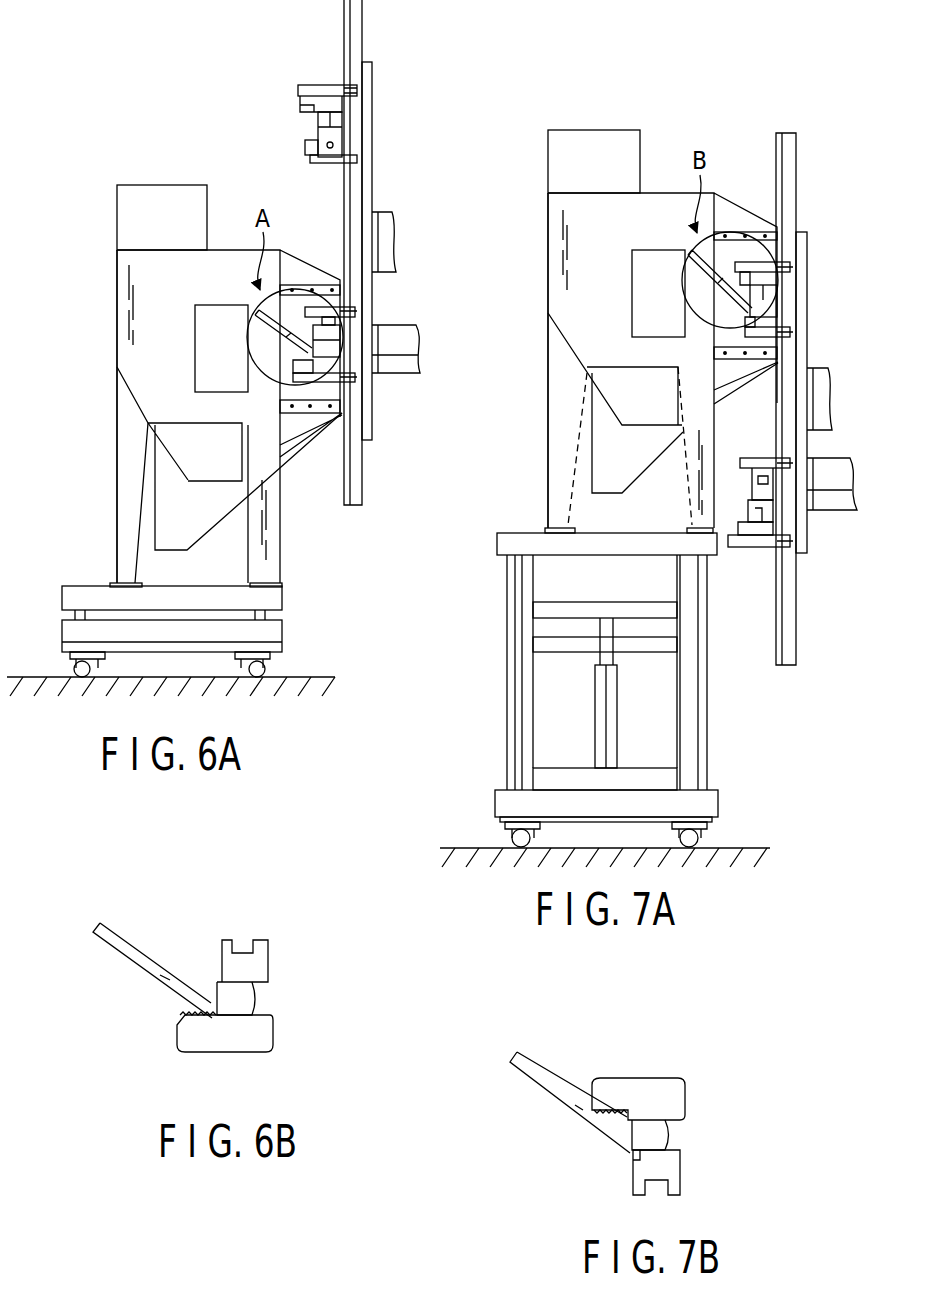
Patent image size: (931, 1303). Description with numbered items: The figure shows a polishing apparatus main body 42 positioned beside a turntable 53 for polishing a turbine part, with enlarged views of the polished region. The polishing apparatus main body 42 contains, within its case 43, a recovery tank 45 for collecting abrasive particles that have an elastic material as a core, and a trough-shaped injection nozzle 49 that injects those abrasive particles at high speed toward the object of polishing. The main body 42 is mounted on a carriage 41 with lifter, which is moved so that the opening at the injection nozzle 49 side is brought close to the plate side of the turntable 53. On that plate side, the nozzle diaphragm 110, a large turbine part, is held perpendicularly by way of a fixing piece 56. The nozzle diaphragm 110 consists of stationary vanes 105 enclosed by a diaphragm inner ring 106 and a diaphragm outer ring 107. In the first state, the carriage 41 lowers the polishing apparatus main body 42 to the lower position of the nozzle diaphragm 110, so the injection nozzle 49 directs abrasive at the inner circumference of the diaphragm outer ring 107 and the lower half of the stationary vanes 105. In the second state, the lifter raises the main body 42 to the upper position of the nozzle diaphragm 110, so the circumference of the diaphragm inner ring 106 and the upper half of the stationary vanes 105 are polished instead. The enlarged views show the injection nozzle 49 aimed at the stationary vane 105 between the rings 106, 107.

In FIG. 6A, the carriage with lifter 41 is at (268, 600).
In FIG. 7A, the carriage with lifter 41 is at (707, 740).
In FIG. 6A, the polishing apparatus main body 42 is at (107, 365).
In FIG. 7A, the polishing apparatus main body 42 is at (538, 320).
In FIG. 6A, the case 43 is at (115, 442).
In FIG. 7A, the case 43 is at (548, 398).
In FIG. 6A, the recovery tank 45 is at (165, 525).
In FIG. 7A, the recovery tank 45 is at (602, 478).
In FIG. 6A, the injection nozzle 49 is at (283, 331).
In FIG. 7A, the injection nozzle 49 is at (720, 281).
In FIG. 6B, the injection nozzle 49 is at (130, 962).
In FIG. 7B, the injection nozzle 49 is at (535, 1088).
In FIG. 6A, the turntable 53 is at (358, 34).
In FIG. 7A, the turntable 53 is at (790, 178).
In FIG. 6A, the fixing piece 56 is at (313, 85).
In FIG. 7A, the fixing piece 56 is at (740, 552).
In FIG. 6B, the stationary vane 105 is at (242, 1000).
In FIG. 7B, the stationary vane 105 is at (653, 1138).
In FIG. 6B, the diaphragm inner ring 106 is at (260, 968).
In FIG. 7B, the diaphragm inner ring 106 is at (672, 1165).
In FIG. 6B, the diaphragm outer ring 107 is at (257, 1038).
In FIG. 7B, the diaphragm outer ring 107 is at (670, 1102).
In FIG. 6A, the nozzle diaphragm 110 is at (327, 120).
In FIG. 7A, the nozzle diaphragm 110 is at (762, 298).
In FIG. 6B, the nozzle diaphragm 110 is at (248, 1063).
In FIG. 7B, the nozzle diaphragm 110 is at (640, 1068).